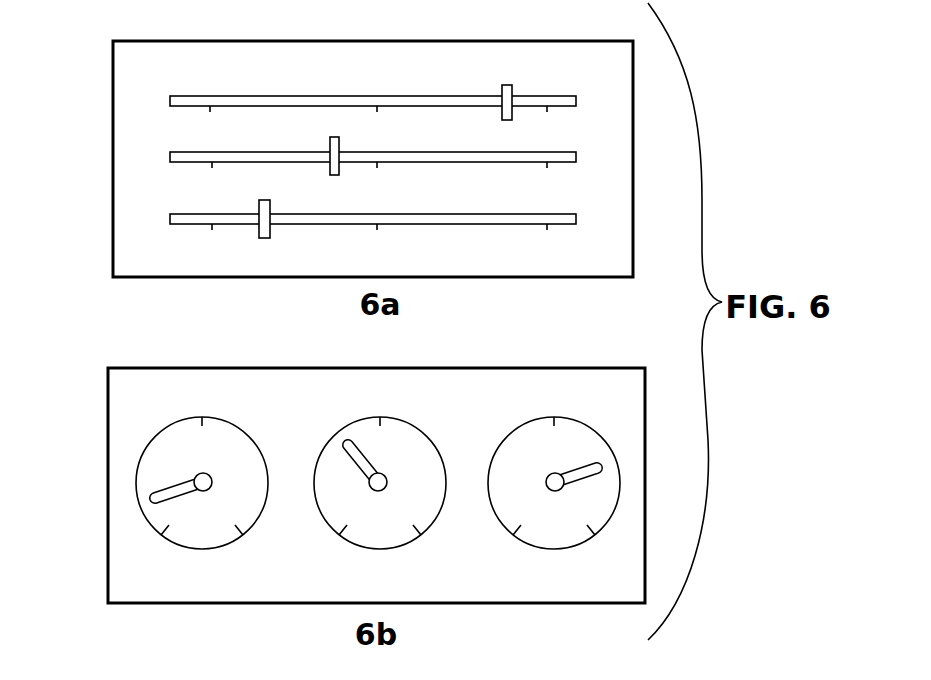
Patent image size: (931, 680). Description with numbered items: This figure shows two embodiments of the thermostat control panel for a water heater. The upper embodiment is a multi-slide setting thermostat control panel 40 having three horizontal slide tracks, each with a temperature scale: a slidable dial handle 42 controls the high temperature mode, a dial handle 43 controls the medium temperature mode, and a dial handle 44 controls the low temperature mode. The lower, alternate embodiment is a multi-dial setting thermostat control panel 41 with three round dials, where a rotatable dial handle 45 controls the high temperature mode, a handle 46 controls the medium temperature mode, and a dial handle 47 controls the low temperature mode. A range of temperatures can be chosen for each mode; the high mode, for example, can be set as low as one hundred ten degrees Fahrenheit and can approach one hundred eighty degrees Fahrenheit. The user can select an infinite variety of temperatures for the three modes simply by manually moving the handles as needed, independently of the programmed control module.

The multi-slide setting thermostat control panel 40 is at (95, 148).
The multi-dial setting thermostat control panel 41 is at (95, 477).
The slidable dial handle 42 is at (512, 92).
The dial handle 43 is at (330, 145).
The dial handle 44 is at (268, 230).
The rotatable dial handle 45 is at (590, 463).
The handle 46 is at (366, 478).
The dial handle 47 is at (178, 483).